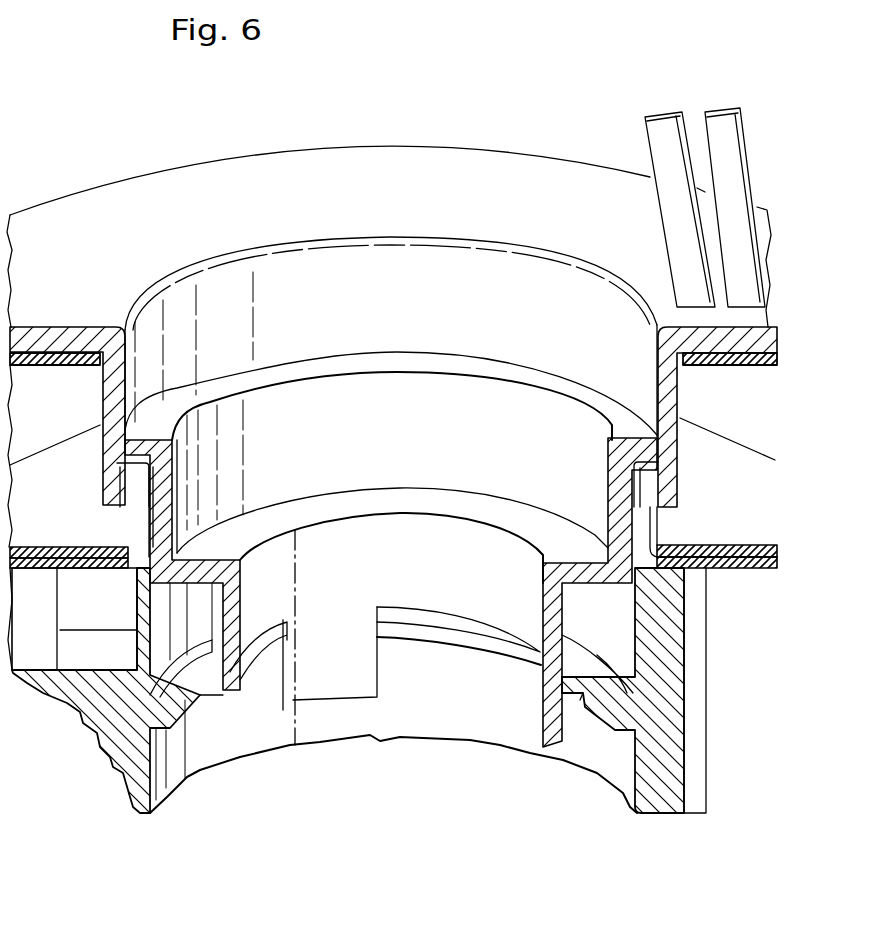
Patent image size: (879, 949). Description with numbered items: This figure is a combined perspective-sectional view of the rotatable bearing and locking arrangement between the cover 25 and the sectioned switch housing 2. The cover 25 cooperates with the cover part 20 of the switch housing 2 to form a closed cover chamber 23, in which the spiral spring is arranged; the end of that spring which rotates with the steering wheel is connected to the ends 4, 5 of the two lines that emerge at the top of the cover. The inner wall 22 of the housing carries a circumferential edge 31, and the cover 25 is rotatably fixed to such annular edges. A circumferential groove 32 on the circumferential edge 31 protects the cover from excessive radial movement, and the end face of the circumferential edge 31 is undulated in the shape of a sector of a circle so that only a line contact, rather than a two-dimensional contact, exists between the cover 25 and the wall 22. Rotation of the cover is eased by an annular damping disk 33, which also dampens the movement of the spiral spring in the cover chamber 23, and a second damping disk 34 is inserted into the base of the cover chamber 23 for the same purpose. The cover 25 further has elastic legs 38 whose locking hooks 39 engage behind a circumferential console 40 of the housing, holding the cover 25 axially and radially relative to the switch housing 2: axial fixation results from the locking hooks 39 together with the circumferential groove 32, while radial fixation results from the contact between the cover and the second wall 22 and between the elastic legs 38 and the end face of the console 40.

The switch housing 2 is at (663, 760).
The line end 4 is at (655, 135).
The line end 5 is at (727, 137).
The cover part 20 is at (730, 576).
The inner wall 22 is at (645, 513).
The cover chamber 23 is at (737, 416).
The cover 25 is at (140, 197).
The circumferential edge 31 is at (603, 432).
The circumferential groove 32 is at (660, 504).
The annular damping disk 33 is at (35, 362).
The second damping disk 34 is at (48, 545).
The elastic leg 38 is at (343, 697).
The locking hook 39 is at (257, 695).
The circumferential console 40 is at (215, 697).